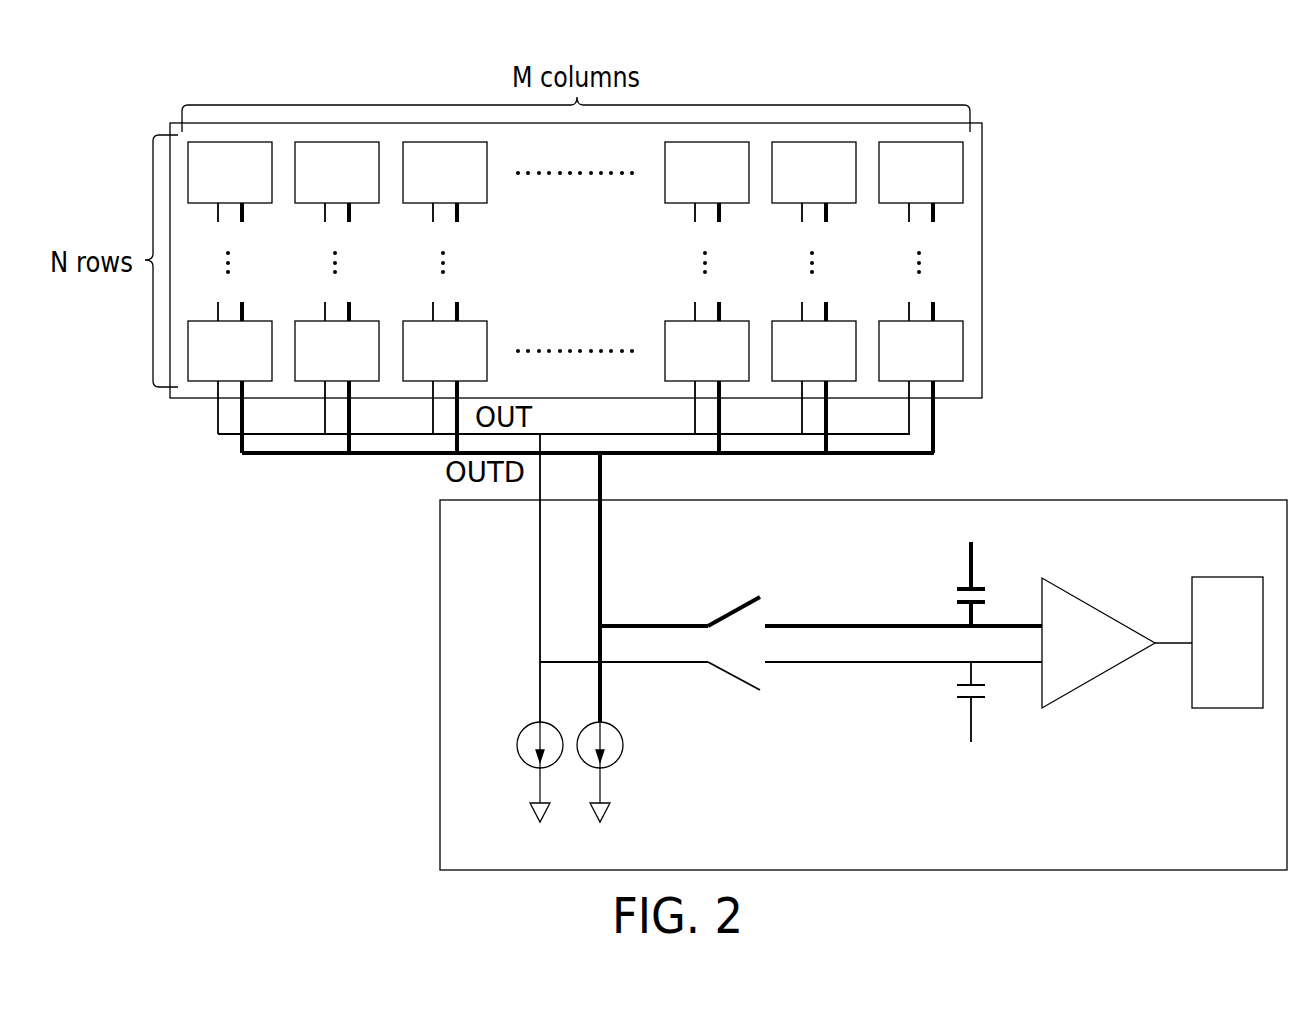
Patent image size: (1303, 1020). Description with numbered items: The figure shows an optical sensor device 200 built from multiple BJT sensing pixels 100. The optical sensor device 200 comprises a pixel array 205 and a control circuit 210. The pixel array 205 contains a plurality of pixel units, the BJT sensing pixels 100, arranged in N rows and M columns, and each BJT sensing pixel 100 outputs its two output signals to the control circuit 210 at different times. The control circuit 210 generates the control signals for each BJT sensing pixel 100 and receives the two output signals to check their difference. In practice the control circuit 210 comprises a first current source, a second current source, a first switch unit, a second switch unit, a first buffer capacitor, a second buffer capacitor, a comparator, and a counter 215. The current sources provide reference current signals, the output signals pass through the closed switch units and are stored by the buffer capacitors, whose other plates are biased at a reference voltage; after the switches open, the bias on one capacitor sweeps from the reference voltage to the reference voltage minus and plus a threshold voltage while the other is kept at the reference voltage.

The BJT sensing pixel 100 is at (251, 187).
The optical sensor device 200 is at (1158, 83).
The pixel array 205 is at (982, 260).
The control circuit 210 is at (440, 683).
The counter 215 is at (1248, 660).